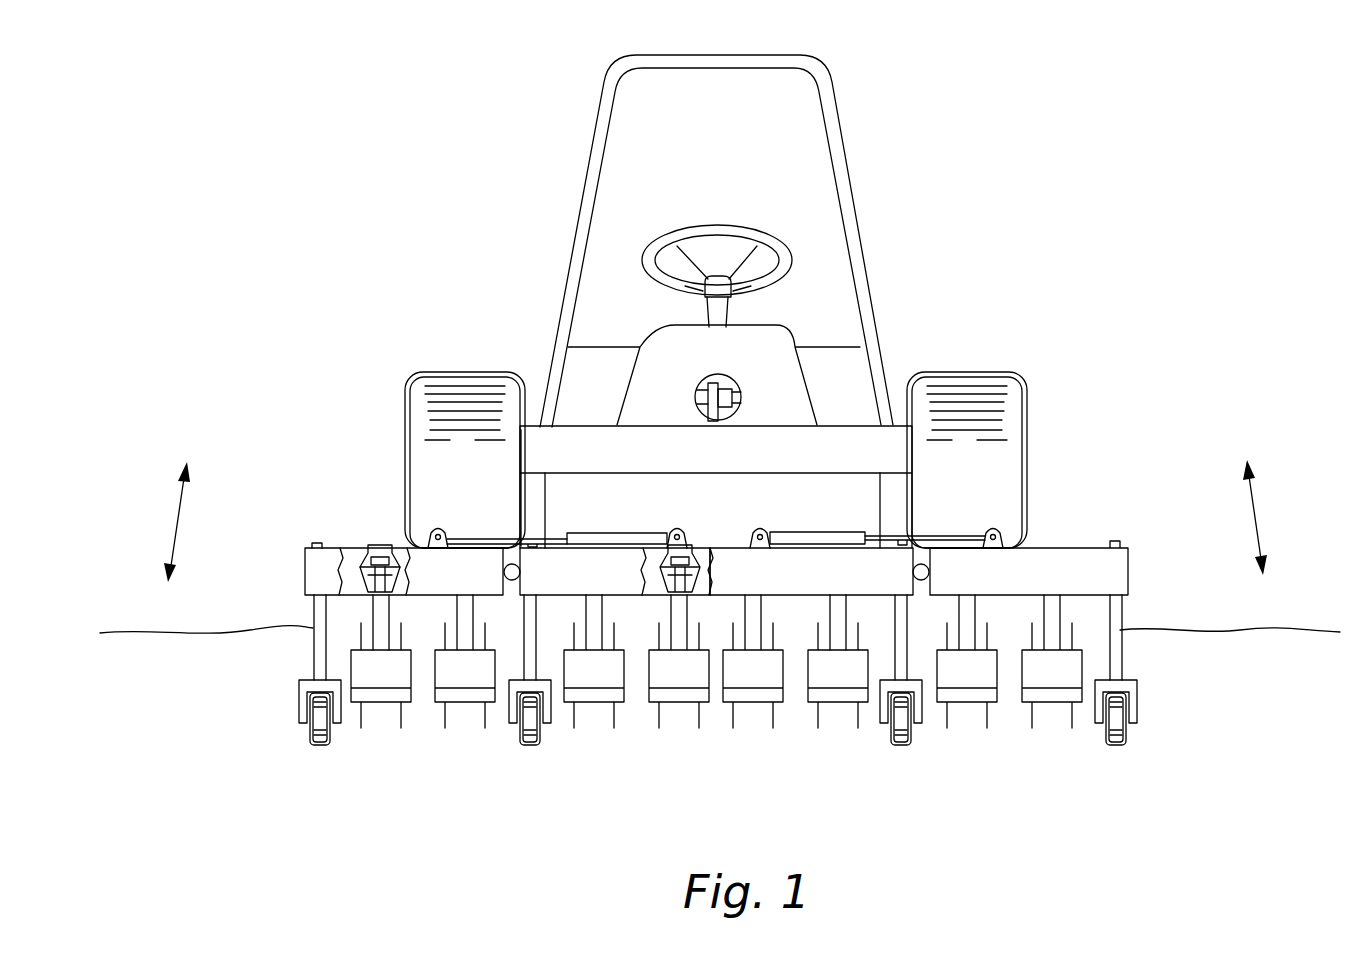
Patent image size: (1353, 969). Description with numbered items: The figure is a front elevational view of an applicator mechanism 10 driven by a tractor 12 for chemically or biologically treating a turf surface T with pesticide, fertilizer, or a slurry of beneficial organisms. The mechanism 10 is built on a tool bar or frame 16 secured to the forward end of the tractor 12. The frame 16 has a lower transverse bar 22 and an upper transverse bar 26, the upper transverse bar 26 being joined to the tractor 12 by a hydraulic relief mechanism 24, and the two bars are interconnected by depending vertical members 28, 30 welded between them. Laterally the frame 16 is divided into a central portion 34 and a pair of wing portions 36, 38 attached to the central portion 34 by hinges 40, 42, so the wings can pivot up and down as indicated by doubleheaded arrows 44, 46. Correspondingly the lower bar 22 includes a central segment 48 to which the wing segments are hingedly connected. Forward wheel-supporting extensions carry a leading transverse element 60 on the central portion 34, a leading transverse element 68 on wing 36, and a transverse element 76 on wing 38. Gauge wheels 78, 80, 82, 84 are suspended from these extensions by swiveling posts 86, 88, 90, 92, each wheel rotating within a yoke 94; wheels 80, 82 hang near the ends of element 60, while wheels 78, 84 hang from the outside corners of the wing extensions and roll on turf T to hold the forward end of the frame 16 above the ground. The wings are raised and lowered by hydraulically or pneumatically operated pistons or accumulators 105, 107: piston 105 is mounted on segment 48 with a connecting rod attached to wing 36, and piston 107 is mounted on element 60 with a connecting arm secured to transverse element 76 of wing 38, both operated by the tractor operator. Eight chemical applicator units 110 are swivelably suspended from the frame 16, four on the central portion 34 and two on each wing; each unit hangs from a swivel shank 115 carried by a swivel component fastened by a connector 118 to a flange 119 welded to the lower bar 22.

The applicator mechanism 10 is at (1152, 548).
The tractor 12 is at (857, 124).
The tool bar or frame 16 is at (890, 447).
The transverse bar 22 is at (702, 547).
The hydraulic relief mechanism 24 is at (740, 393).
The upper transverse bar 26 is at (532, 443).
The depending vertical member 28 is at (545, 500).
The depending vertical member 30 is at (895, 507).
The central portion 34 is at (740, 567).
The wing portion 36 is at (328, 563).
The wing portion 38 is at (1093, 545).
The hinge 40 is at (512, 582).
The hinge 42 is at (921, 580).
The doubleheaded arrow 44 is at (172, 517).
The doubleheaded arrow 46 is at (1263, 522).
The central segment 48 is at (700, 583).
The leading transverse element 60 is at (797, 595).
The leading transverse element 68 is at (325, 540).
The transverse element 76 is at (1058, 545).
The gauge wheel 78 is at (320, 743).
The gauge wheel 80 is at (533, 742).
The gauge wheel 82 is at (903, 742).
The gauge wheel 84 is at (1113, 742).
The swiveling post 86 is at (313, 617).
The swiveling post 88 is at (537, 640).
The swiveling post 90 is at (897, 640).
The swiveling post 92 is at (1125, 657).
The yoke 94 is at (298, 683).
The piston or accumulator 105 is at (473, 535).
The piston or accumulator 107 is at (807, 513).
The chemical applicator unit 110 is at (460, 734).
The swivel shank 115 is at (382, 613).
The connector 118 is at (377, 546).
The flange 119 is at (400, 549).
The turf surface T is at (1282, 612).